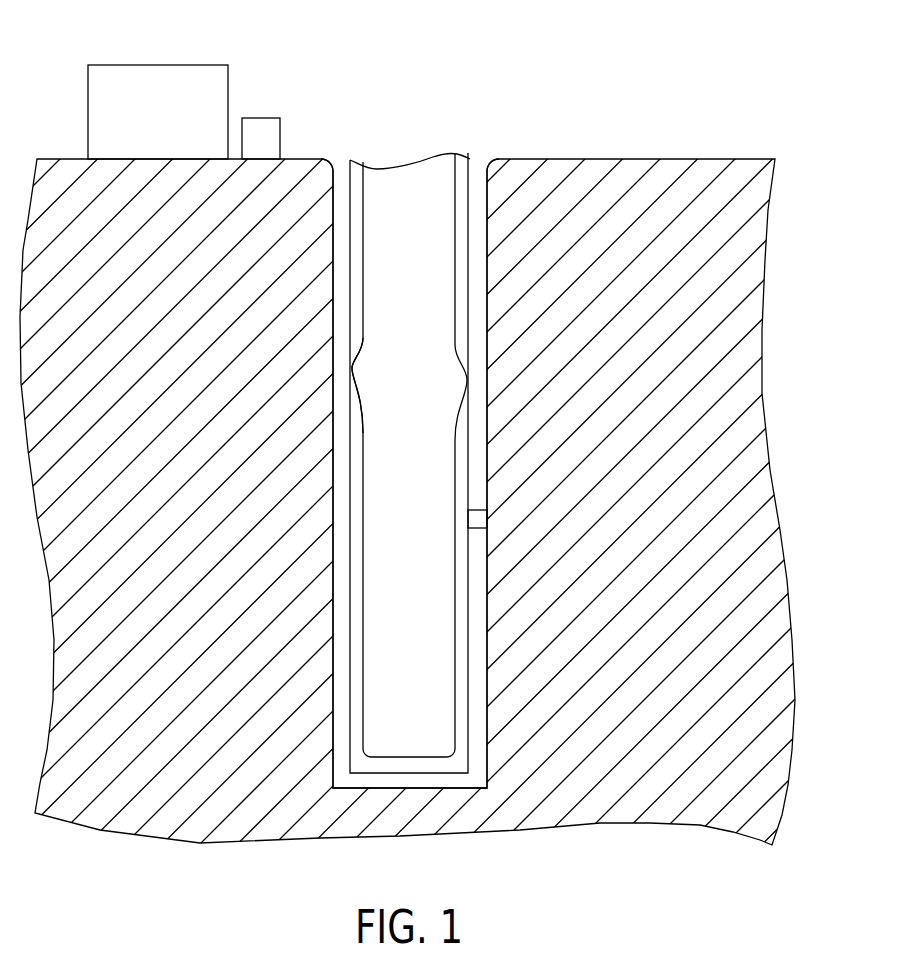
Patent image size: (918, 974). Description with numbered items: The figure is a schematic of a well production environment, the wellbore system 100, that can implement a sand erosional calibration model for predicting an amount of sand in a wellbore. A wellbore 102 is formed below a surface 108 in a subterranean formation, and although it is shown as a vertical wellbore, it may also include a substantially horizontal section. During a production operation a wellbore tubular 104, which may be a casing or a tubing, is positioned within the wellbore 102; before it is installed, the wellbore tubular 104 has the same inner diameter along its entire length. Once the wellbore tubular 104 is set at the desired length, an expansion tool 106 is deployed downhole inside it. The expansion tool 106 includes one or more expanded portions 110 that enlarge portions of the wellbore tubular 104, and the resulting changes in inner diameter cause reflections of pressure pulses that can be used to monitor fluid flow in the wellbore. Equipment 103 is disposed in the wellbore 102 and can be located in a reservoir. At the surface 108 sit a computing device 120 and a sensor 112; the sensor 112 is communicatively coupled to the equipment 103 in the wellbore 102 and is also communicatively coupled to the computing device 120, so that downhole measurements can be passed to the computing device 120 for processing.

The wellbore system 100 is at (459, 431).
The wellbore 102 is at (490, 428).
The equipment 103 is at (468, 520).
The wellbore tubular 104 is at (468, 660).
The expansion tool 106 is at (455, 595).
The surface 108 is at (665, 173).
The expanded portion 110 is at (352, 368).
The sensor 112 is at (262, 132).
The computing device 120 is at (157, 77).